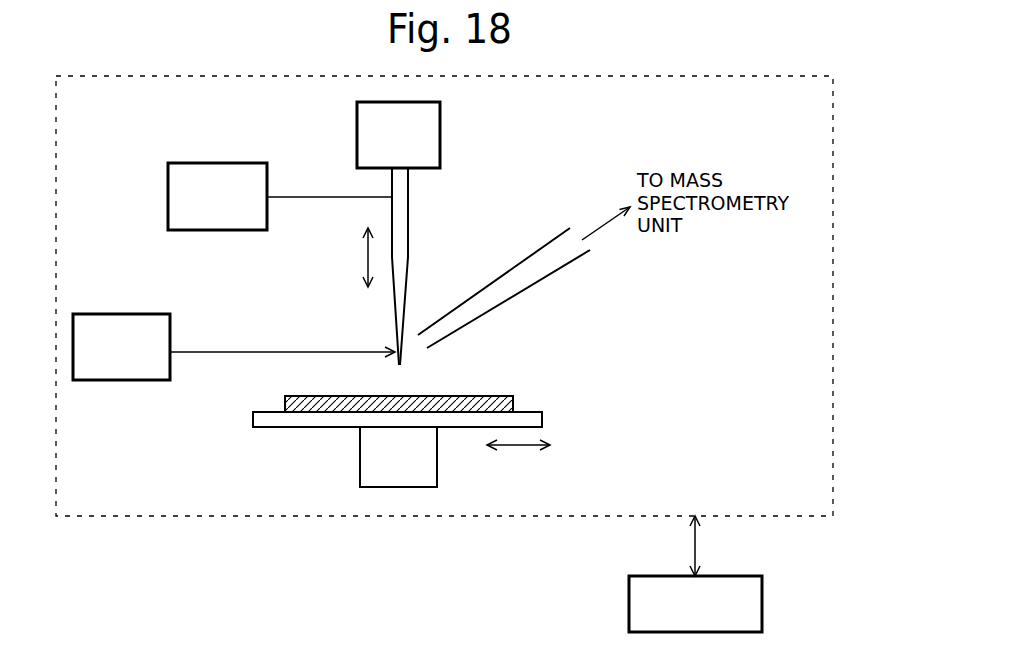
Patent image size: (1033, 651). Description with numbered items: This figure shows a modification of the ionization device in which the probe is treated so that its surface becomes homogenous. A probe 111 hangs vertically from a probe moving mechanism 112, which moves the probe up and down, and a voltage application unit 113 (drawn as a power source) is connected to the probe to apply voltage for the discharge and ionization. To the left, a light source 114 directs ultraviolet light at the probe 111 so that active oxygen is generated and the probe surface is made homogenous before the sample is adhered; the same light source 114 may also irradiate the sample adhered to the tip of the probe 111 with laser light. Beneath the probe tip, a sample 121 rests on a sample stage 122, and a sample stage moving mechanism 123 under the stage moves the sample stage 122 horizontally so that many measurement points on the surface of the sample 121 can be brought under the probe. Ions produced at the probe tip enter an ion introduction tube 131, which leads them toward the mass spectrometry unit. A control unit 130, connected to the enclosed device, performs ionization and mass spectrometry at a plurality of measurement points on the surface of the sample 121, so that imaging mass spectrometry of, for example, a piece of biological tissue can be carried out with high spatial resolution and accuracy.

The probe 111 is at (408, 238).
The probe moving mechanism 112 is at (440, 133).
The voltage application unit 113 is at (218, 163).
The light source 114 is at (118, 380).
The sample 121 is at (515, 400).
The sample stage 122 is at (545, 413).
The sample stage moving mechanism 123 is at (437, 455).
The control unit 130 is at (762, 604).
The ion introduction tube 131 is at (540, 282).